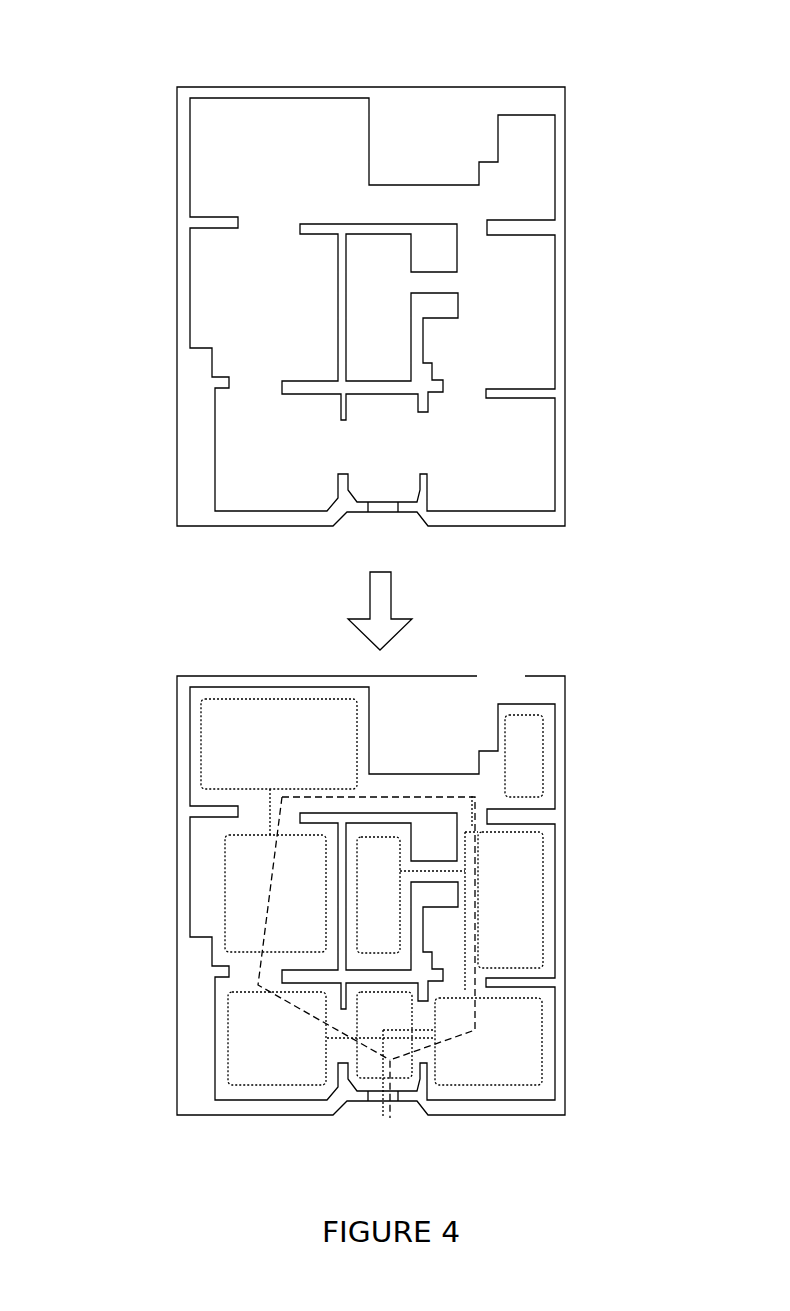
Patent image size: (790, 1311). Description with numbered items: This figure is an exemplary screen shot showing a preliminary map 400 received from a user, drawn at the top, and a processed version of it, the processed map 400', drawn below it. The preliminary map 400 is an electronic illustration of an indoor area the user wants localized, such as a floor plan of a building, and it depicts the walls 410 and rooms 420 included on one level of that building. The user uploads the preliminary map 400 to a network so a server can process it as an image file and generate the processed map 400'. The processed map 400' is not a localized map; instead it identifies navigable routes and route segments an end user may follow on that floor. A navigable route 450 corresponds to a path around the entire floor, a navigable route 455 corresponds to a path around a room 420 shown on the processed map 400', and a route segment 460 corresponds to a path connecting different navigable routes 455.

The preliminary map 400 is at (316, 267).
The walls 410 is at (193, 398).
The rooms 420 is at (232, 277).
The processed map 400' is at (375, 889).
The navigable route 455 is at (545, 750).
The route segment 460 is at (383, 789).
The navigable route 450 is at (258, 978).